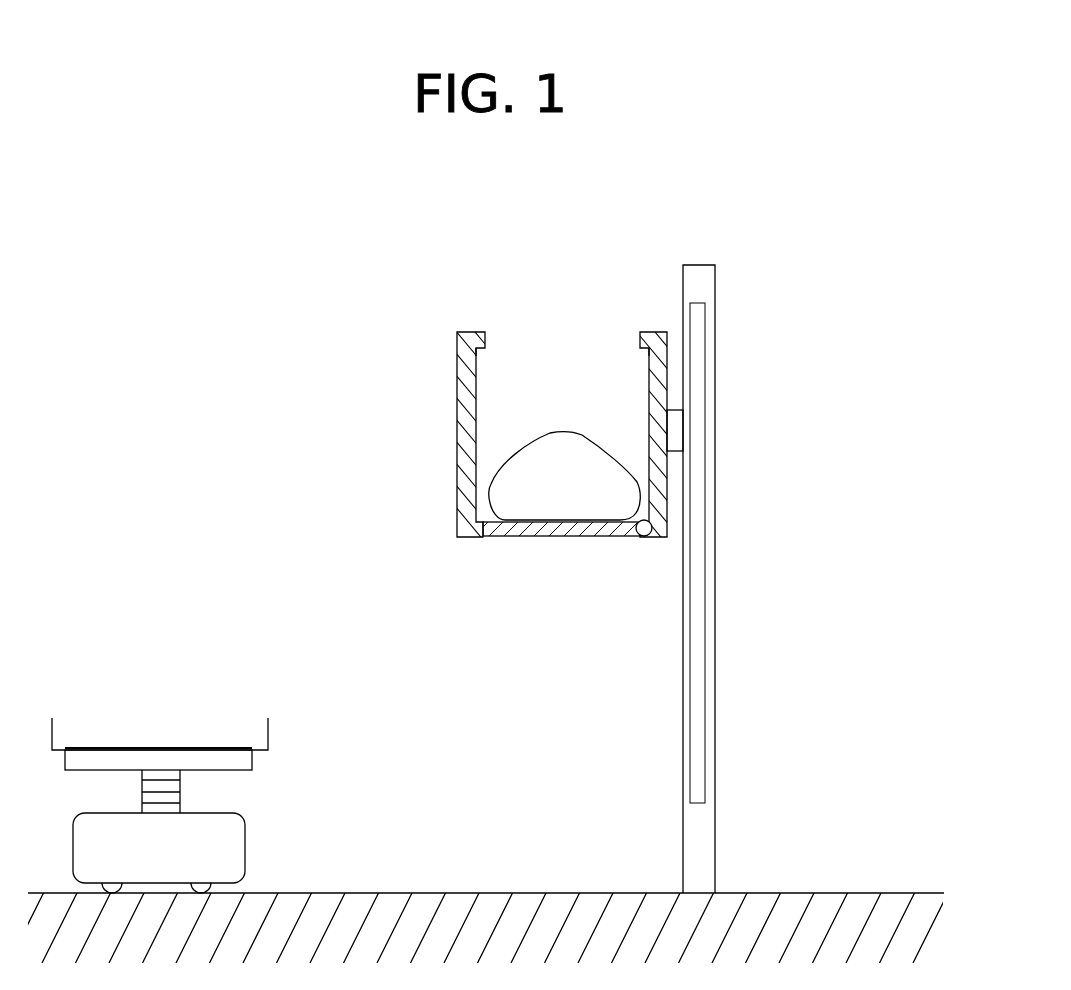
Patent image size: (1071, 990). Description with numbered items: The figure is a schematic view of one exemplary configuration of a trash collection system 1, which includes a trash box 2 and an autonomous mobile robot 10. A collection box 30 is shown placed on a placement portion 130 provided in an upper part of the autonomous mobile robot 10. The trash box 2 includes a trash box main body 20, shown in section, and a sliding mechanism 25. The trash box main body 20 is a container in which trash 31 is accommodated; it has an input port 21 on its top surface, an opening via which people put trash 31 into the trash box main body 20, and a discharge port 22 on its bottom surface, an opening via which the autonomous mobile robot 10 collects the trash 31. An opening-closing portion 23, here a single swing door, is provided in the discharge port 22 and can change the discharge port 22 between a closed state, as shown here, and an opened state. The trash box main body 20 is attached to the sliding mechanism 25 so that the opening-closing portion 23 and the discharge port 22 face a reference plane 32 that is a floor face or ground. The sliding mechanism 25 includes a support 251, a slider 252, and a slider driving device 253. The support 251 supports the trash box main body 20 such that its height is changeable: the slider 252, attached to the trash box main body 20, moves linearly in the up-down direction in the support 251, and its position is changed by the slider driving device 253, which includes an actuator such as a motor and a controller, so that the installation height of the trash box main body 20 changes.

The trash collection system 1 is at (104, 357).
The trash box 2 is at (792, 240).
The autonomous mobile robot 10 is at (245, 838).
The placement portion 130 is at (253, 768).
The collection box 30 is at (268, 730).
The trash 31 is at (563, 431).
The reference plane 32 is at (540, 893).
The trash box main body 20 is at (457, 360).
The input port 21 is at (540, 328).
The discharge port 22 is at (537, 560).
The opening-closing portion 23 is at (592, 538).
The sliding mechanism 25 is at (728, 428).
The support 251 is at (715, 312).
The slider 252 is at (690, 384).
The slider driving device 253 is at (706, 522).